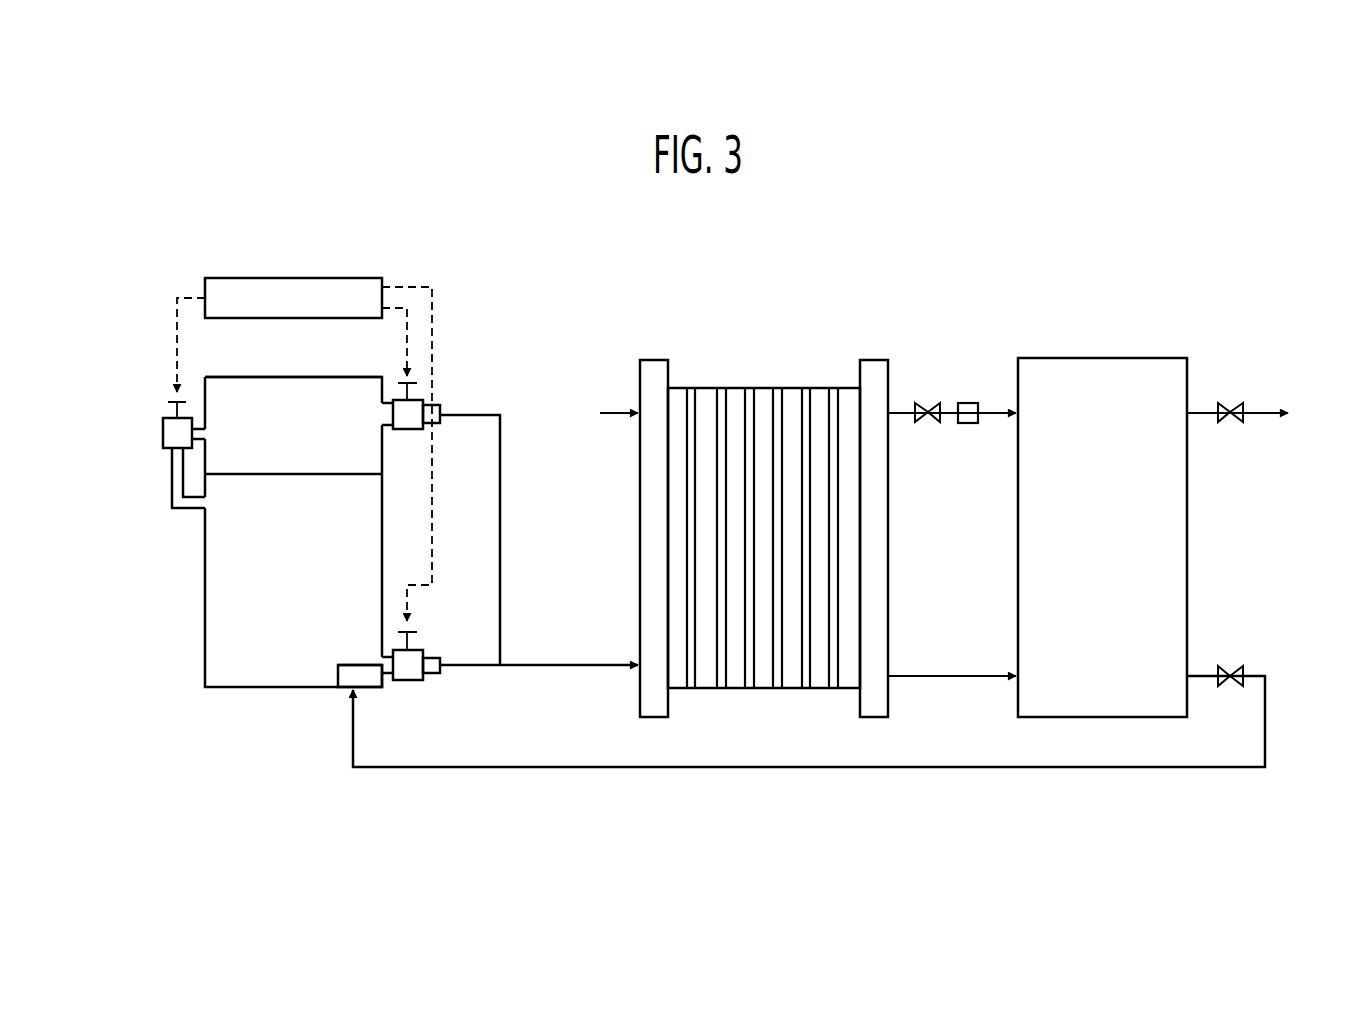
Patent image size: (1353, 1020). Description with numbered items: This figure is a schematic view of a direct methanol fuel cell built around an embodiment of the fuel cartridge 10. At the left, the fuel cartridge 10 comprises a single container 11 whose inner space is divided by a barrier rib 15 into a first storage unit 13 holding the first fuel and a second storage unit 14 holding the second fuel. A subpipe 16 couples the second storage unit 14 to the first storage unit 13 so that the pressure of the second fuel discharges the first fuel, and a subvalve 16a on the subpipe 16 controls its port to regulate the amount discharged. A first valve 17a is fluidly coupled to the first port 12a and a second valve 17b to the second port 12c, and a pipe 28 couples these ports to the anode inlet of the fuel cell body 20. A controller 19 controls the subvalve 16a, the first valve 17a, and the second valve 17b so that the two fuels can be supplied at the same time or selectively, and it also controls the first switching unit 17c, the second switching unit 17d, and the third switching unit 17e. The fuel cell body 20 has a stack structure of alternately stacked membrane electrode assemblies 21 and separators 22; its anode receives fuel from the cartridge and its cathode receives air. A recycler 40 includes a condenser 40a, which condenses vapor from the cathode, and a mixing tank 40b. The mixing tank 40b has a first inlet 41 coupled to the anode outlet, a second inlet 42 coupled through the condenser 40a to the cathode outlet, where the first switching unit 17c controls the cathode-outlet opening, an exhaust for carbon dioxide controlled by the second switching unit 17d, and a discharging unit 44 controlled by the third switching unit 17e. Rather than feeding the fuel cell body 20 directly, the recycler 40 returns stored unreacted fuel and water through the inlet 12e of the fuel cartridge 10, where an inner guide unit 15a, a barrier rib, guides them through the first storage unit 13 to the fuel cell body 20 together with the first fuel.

The fuel cartridge 10 is at (170, 250).
The single container 11 is at (220, 689).
The first port 12a is at (434, 653).
The second port 12c is at (435, 407).
The inlet 12e is at (357, 689).
The first storage unit 13 is at (262, 677).
The second storage unit 14 is at (286, 380).
The barrier rib 15 is at (285, 474).
The inner guide unit 15a is at (337, 678).
The subpipe 16 is at (170, 479).
The subvalve 16a is at (172, 393).
The first valve 17a is at (412, 628).
The second valve 17b is at (412, 378).
The first switching unit 17c is at (925, 401).
The second switching unit 17d is at (1231, 403).
The third switching unit 17e is at (1231, 667).
The controller 19 is at (286, 282).
The fuel cell body 20 is at (630, 316).
The membrane electrode assembly 21 is at (748, 390).
The separator 22 is at (765, 390).
The pipe 28 is at (535, 666).
The recycler 40 is at (1162, 328).
The condenser 40a is at (965, 425).
The mixing tank 40b is at (1102, 357).
The first inlet 41 is at (1017, 672).
The second inlet 42 is at (1017, 407).
The discharging unit 44 is at (1190, 670).